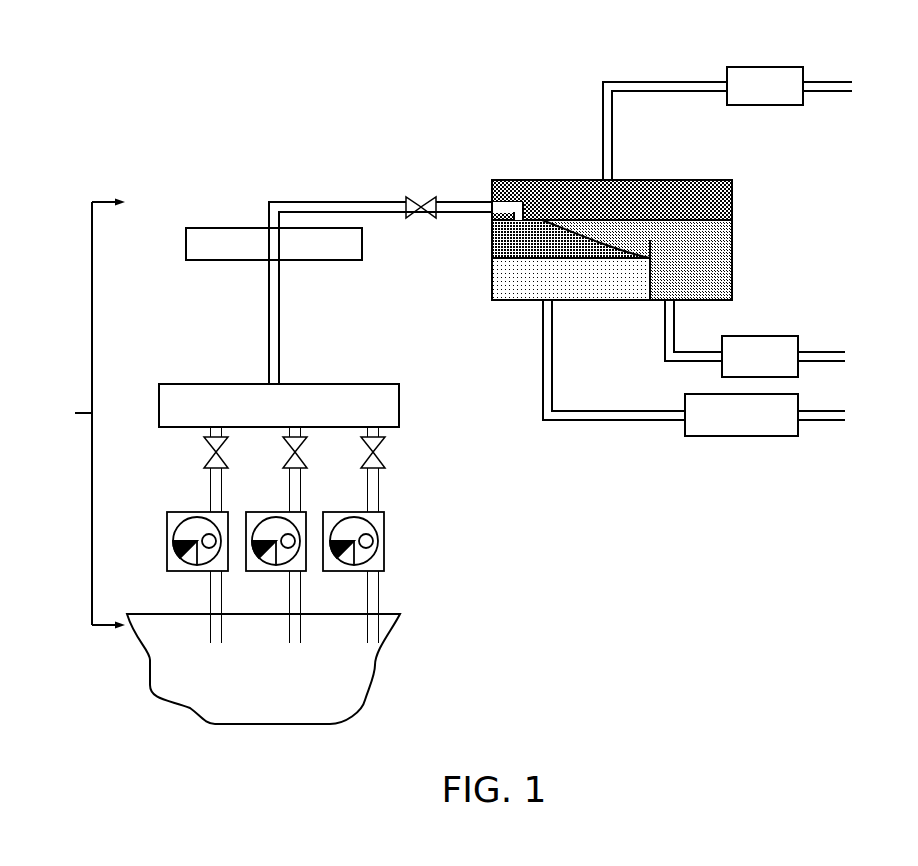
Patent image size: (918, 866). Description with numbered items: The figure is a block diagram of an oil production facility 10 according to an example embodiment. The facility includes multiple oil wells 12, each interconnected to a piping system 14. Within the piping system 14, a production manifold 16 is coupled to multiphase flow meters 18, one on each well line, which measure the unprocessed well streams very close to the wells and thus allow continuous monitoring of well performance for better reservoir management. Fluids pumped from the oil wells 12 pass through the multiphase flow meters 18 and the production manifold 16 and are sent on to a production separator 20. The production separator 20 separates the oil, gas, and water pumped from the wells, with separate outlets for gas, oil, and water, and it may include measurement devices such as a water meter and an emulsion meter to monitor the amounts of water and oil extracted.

The oil production facility 10 is at (178, 78).
The oil wells 12 is at (363, 678).
The piping system 14 is at (85, 414).
The production manifold 16 is at (399, 402).
The multiphase flow meters 18 is at (384, 520).
The production separator 20 is at (733, 237).